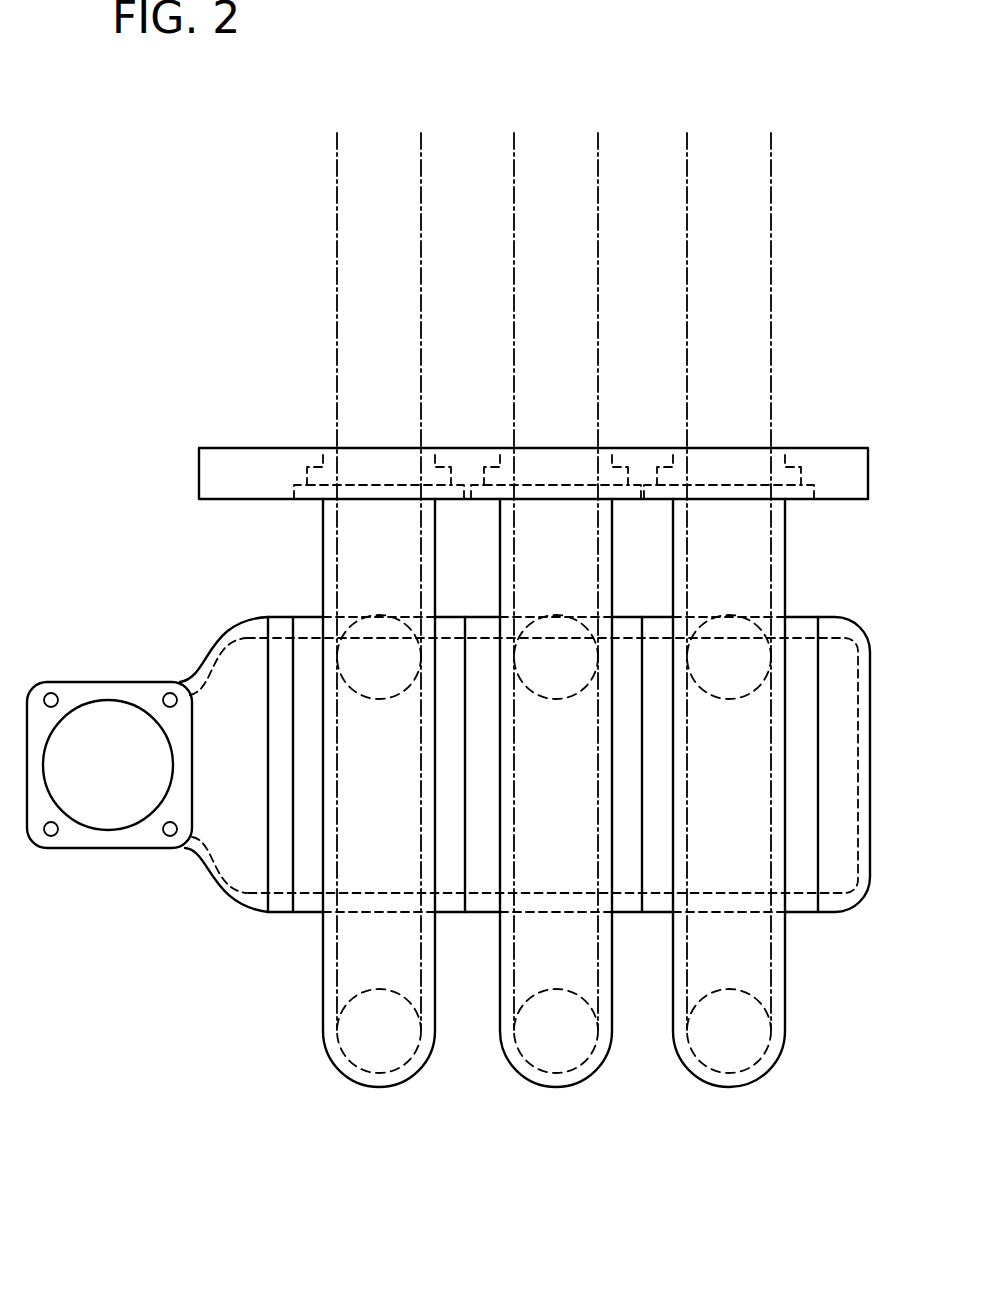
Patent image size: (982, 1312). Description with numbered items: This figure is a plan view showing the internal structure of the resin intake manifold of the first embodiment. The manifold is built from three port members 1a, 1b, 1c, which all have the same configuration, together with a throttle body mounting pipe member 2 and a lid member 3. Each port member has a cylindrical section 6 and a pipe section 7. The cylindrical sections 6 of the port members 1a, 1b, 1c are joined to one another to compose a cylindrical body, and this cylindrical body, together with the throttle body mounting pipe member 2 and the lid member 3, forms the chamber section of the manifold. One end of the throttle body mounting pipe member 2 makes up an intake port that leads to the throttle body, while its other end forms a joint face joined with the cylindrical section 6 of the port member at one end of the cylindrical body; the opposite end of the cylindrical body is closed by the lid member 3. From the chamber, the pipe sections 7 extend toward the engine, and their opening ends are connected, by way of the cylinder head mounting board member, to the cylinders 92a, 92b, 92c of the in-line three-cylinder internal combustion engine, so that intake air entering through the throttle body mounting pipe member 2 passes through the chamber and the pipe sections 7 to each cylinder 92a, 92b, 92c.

The port member 1a is at (388, 1094).
The port member 1b is at (550, 1093).
The port member 1c is at (726, 1093).
The throttle body mounting pipe member 2 is at (124, 673).
The lid member 3 is at (838, 915).
The cylindrical section 6 is at (803, 900).
The pipe section 7 is at (760, 557).
The cylinder 92a is at (337, 337).
The cylinder 92b is at (513, 335).
The cylinder 92c is at (688, 335).